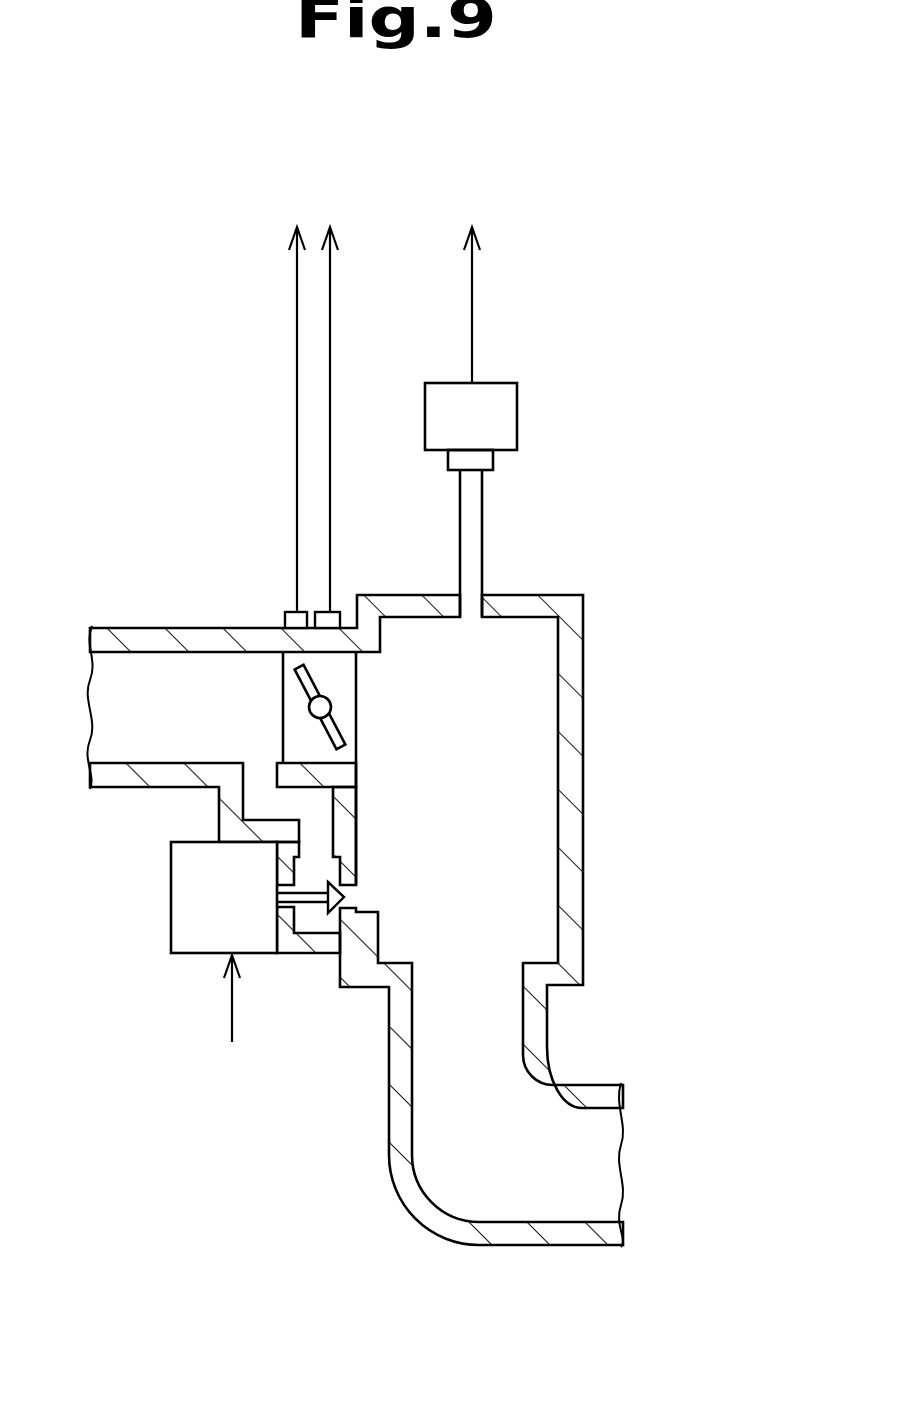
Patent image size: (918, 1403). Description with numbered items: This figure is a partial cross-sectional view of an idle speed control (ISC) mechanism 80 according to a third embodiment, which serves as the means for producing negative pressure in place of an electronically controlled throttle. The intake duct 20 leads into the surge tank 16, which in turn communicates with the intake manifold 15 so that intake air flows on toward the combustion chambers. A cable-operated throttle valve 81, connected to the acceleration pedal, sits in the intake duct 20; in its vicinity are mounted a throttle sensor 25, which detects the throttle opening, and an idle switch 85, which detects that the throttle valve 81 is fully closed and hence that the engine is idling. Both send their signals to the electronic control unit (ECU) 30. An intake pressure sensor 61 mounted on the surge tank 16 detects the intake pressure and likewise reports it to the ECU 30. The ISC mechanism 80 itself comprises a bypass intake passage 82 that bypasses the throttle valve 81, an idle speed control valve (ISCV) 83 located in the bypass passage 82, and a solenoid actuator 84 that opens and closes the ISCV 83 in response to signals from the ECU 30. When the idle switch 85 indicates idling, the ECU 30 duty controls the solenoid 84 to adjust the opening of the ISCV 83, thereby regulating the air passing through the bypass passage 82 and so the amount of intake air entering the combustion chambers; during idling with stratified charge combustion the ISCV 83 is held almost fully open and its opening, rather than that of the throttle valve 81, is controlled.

The intake manifold 15 is at (388, 1122).
The surge tank 16 is at (545, 595).
The intake duct 20 is at (177, 628).
The throttle sensor 25 is at (335, 610).
The electronic control unit 30 is at (328, 646).
The intake pressure sensor 61 is at (425, 412).
The idle speed control mechanism 80 is at (140, 951).
The throttle valve 81 is at (283, 688).
The bypass intake passage 82 is at (323, 803).
The idle speed control valve 83 is at (313, 885).
The actuator 84 is at (170, 888).
The idle switch 85 is at (287, 610).